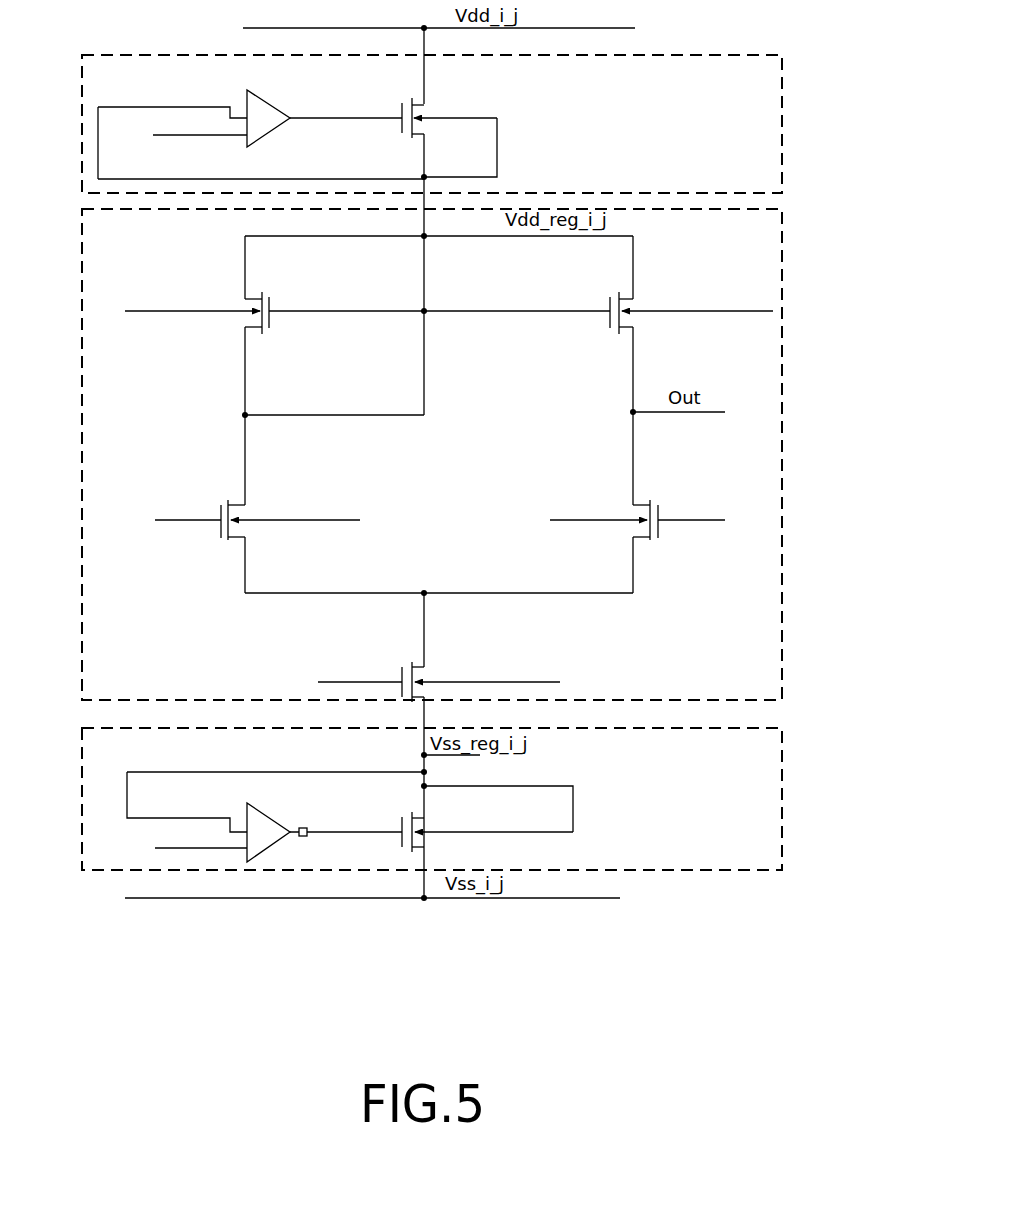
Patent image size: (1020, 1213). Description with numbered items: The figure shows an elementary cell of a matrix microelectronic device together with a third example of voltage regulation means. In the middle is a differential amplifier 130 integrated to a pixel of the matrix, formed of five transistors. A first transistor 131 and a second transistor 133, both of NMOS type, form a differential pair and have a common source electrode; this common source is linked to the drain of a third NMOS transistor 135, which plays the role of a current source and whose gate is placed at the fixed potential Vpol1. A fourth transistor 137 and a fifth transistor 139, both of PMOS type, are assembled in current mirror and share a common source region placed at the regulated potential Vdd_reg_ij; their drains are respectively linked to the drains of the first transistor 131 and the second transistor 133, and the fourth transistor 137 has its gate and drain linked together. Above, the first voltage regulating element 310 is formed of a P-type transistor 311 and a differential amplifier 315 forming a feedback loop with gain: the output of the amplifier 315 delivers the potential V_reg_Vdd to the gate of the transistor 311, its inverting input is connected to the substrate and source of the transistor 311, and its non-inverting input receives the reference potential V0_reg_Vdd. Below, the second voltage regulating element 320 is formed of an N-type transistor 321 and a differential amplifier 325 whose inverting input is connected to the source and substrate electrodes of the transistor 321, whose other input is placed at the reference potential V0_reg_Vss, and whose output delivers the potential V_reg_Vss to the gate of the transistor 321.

The first voltage regulating element 310 is at (786, 57).
The transistor 311 is at (478, 152).
The differential amplifier 315 is at (240, 147).
The differential amplifier 130 is at (788, 480).
The first transistor 131 is at (217, 545).
The second transistor 133 is at (655, 545).
The third transistor 135 is at (513, 648).
The fourth transistor 137 is at (252, 318).
The fifth transistor 139 is at (637, 318).
The second voltage regulating element 320 is at (733, 870).
The transistor 321 is at (398, 860).
The differential amplifier 325 is at (255, 848).